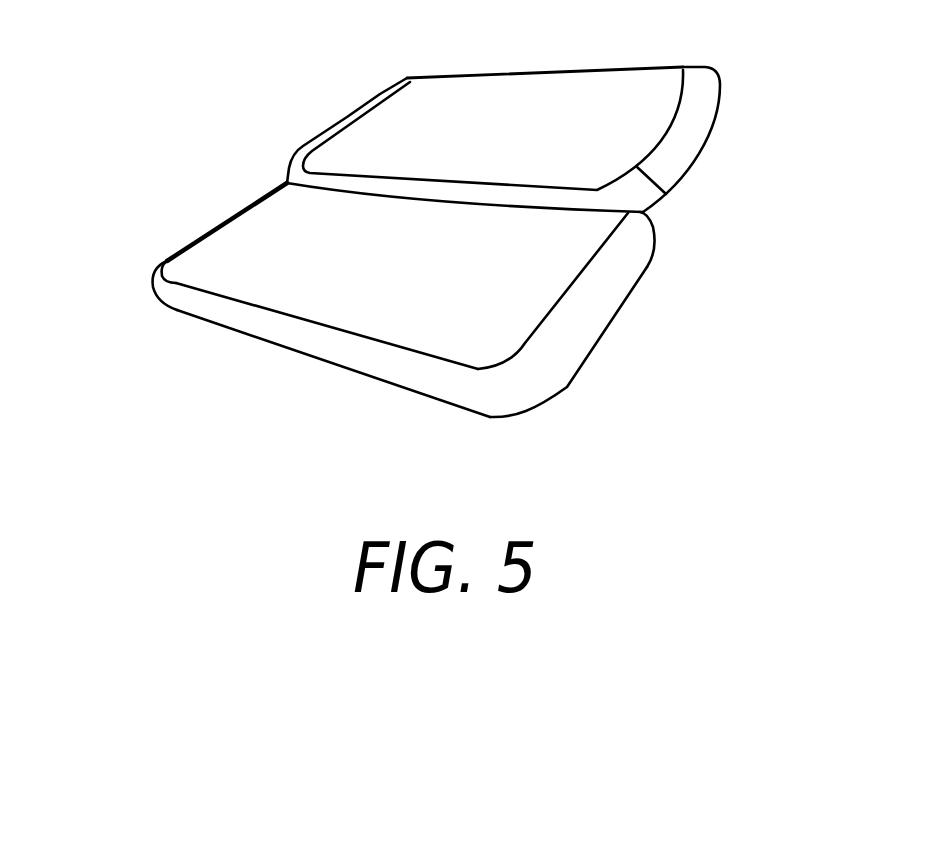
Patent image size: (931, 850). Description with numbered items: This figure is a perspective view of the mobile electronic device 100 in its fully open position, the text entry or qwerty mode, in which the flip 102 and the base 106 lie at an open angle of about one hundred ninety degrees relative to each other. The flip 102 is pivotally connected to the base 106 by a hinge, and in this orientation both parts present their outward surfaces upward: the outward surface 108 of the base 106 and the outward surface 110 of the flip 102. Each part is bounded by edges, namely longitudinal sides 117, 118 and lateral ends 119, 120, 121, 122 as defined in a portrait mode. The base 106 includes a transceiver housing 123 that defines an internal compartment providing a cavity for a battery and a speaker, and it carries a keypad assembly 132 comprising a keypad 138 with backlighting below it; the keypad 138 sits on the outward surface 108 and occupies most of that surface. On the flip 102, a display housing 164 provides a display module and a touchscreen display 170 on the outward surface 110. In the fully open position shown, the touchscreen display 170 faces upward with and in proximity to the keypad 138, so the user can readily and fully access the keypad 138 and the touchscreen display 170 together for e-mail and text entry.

The mobile electronic device 100 is at (238, 55).
The flip 102 is at (716, 82).
The base 106 is at (610, 333).
The outward surface of the base 108 is at (197, 289).
The outward surface of the flip 110 is at (407, 78).
The longitudinal side 117 is at (290, 350).
The longitudinal side 118 is at (500, 74).
The lateral end 119 is at (212, 233).
The lateral end 120 is at (380, 90).
The lateral end 121 is at (703, 143).
The lateral end 122 is at (650, 265).
The transceiver housing 123 is at (163, 261).
The keypad assembly 132 is at (270, 205).
The keypad 138 is at (433, 340).
The display housing 164 is at (663, 191).
The touchscreen display 170 is at (590, 87).